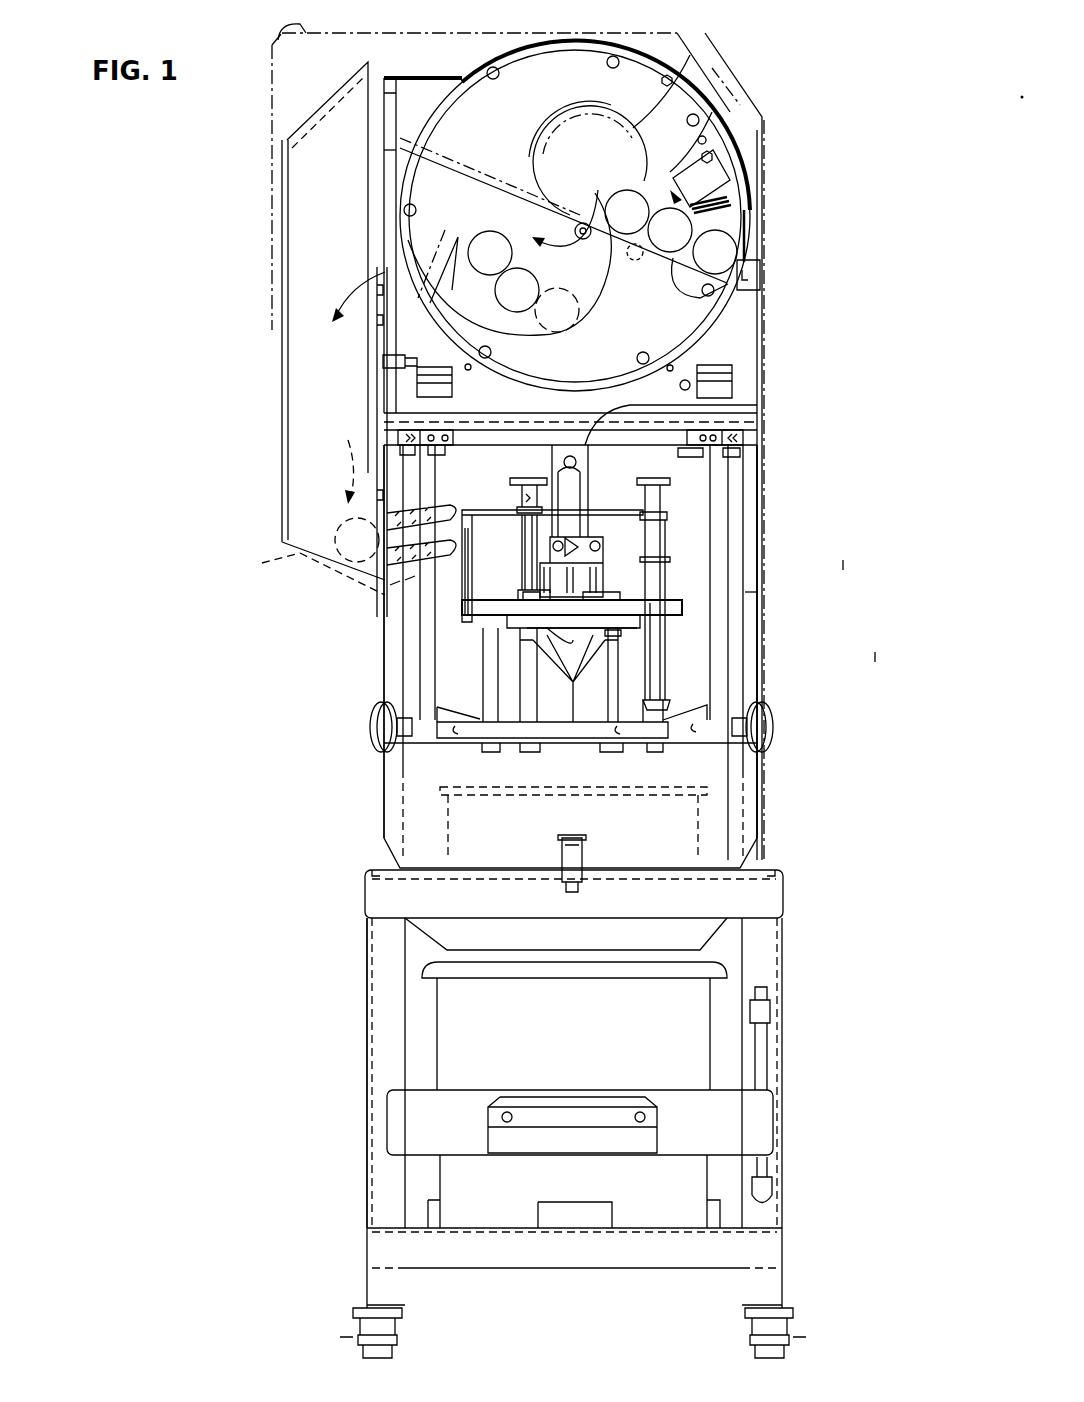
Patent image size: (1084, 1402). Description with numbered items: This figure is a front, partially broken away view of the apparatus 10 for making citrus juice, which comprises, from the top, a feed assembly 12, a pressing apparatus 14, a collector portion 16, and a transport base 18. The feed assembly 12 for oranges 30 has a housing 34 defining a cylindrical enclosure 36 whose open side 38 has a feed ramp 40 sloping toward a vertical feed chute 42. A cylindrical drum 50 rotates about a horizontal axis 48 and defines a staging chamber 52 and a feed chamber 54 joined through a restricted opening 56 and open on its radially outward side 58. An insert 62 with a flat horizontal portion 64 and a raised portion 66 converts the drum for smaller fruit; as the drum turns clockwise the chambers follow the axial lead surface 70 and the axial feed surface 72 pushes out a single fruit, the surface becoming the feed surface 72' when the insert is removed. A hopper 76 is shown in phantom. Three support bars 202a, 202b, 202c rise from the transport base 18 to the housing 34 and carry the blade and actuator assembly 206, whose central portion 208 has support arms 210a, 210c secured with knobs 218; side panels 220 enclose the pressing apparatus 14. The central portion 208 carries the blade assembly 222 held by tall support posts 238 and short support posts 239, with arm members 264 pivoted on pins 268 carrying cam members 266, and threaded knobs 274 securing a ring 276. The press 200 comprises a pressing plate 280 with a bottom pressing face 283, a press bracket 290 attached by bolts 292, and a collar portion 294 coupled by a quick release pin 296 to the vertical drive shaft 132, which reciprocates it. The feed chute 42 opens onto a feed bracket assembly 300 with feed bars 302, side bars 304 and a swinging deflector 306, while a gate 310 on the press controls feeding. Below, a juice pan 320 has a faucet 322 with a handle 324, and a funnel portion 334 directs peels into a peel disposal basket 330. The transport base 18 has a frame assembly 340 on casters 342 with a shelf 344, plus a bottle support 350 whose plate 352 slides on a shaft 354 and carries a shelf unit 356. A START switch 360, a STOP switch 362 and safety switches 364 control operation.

The apparatus 10 is at (874, 657).
The feed assembly 12 is at (800, 218).
The pressing apparatus 14 is at (842, 565).
The collector portion 16 is at (849, 893).
The transport base 18 is at (812, 1112).
The oranges 30 is at (638, 223).
The housing 34 is at (512, 50).
The cylindrical enclosure 36 is at (683, 50).
The open side 38 is at (396, 155).
The feed ramp 40 is at (383, 290).
The feed chute 42 is at (283, 300).
The horizontal axis 48 is at (575, 229).
The cylindrical drum 50 is at (509, 140).
The staging chamber 52 is at (550, 165).
The feed chamber 54 is at (711, 221).
The restricted opening 56 is at (720, 190).
The radially outward side 58 is at (740, 213).
The insert 62 is at (712, 68).
The flat horizontal portion 64 is at (597, 169).
The raised portion 66 is at (720, 180).
The axial lead surface 70 is at (748, 293).
The axial feed surface 72 is at (758, 187).
The feed surface 72' is at (735, 118).
The hopper 76 is at (282, 33).
The vertical drive shaft 132 is at (592, 490).
The press 200 is at (750, 598).
The support bar 202a is at (405, 765).
The support bar 202b is at (720, 445).
The support bar 202c is at (742, 528).
The blade and actuator assembly 206 is at (662, 690).
The central portion 208 is at (700, 770).
The support arm 210a is at (395, 735).
The support arm 210c is at (757, 738).
The knobs 218 is at (373, 727).
The side panels 220 is at (385, 690).
The blade assembly 222 is at (430, 780).
The tall support posts 238 is at (608, 555).
The short support posts 239 is at (549, 700).
The arm members 264 is at (662, 667).
The cam members 266 is at (770, 716).
The pins 268 is at (684, 575).
The threaded knobs 274 is at (528, 481).
The ring 276 is at (652, 536).
The pressing plate 280 is at (690, 628).
The bottom pressing face 283 is at (520, 658).
The press bracket 290 is at (692, 612).
The bolts 292 is at (480, 605).
The collar portion 294 is at (622, 592).
The quick release pin 296 is at (606, 570).
The feed bracket assembly 300 is at (520, 583).
The feed bars 302 is at (520, 625).
The side bars 304 is at (450, 540).
The swinging deflector 306 is at (450, 508).
The gate 310 is at (430, 577).
The juice pan 320 is at (745, 822).
The faucet 322 is at (560, 878).
The handle 324 is at (560, 848).
The peel disposal basket 330 is at (583, 1060).
The funnel portion 334 is at (573, 950).
The frame assembly 340 is at (402, 988).
The casters 342 is at (355, 1330).
The shelf 344 is at (420, 1212).
The bottle support 350 is at (434, 1120).
The plate 352 is at (723, 1117).
The shaft 354 is at (770, 1030).
The shelf unit 356 is at (530, 1140).
The START switch 360 is at (720, 392).
The STOP switch 362 is at (415, 365).
The switches 364 is at (400, 458).